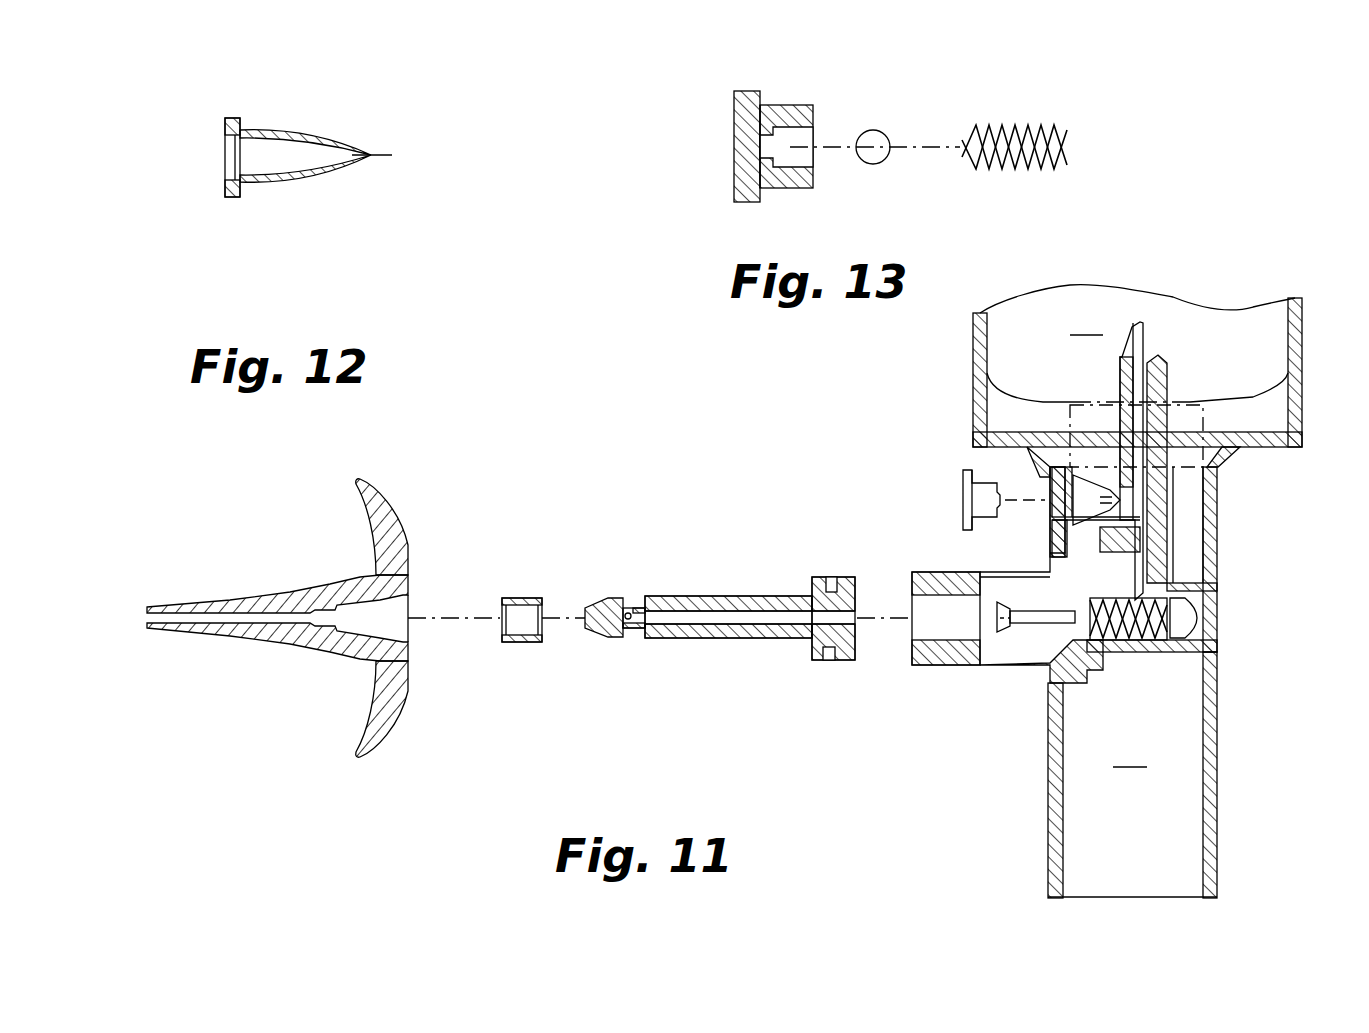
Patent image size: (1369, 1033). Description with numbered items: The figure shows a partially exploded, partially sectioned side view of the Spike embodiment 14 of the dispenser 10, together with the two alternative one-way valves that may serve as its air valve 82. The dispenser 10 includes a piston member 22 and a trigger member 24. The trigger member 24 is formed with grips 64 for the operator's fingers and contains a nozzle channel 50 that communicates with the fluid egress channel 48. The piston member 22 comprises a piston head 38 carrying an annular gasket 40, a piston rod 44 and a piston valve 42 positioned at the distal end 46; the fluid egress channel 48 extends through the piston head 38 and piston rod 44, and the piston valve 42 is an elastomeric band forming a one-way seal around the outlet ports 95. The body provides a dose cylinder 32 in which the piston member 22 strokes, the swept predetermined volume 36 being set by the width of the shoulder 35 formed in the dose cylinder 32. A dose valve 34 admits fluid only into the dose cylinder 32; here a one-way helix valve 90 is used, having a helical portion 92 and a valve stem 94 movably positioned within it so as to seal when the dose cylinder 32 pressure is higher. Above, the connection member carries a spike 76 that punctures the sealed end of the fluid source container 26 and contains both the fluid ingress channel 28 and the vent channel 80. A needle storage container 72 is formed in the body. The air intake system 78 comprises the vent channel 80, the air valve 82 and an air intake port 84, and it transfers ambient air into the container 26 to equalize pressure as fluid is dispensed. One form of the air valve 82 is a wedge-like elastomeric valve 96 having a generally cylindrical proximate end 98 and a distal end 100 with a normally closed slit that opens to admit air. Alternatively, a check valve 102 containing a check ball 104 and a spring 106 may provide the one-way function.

In FIG. 11, the dispenser 10 is at (529, 590).
In FIG. 11, the Spike embodiment 14 is at (741, 556).
In FIG. 11, the piston member 22 is at (741, 607).
In FIG. 11, the trigger member 24 is at (317, 627).
In FIG. 11, the fluid source container 26 is at (1137, 381).
In FIG. 11, the fluid ingress channel 28 is at (1207, 436).
In FIG. 11, the dose cylinder 32 is at (980, 666).
In FIG. 11, the dose valve 34 is at (1210, 585).
In FIG. 11, the shoulder 35 is at (940, 668).
In FIG. 11, the predetermined volume 36 is at (1038, 655).
In FIG. 11, the piston head 38 is at (856, 580).
In FIG. 11, the annular gasket 40 is at (832, 578).
In FIG. 11, the piston valve 42 is at (515, 597).
In FIG. 11, the piston rod 44 is at (773, 640).
In FIG. 11, the distal end 46 is at (612, 597).
In FIG. 11, the fluid egress channel 48 is at (702, 624).
In FIG. 11, the nozzle channel 50 is at (392, 622).
In FIG. 11, the grips 64 is at (358, 497).
In FIG. 11, the storage container 72 is at (1132, 769).
In FIG. 11, the spike 76 is at (1172, 305).
In FIG. 11, the air intake system 78 is at (1085, 559).
In FIG. 11, the vent channel 80 is at (1138, 305).
In FIG. 12, the air valve 82 is at (336, 207).
In FIG. 13, the air valve 82 is at (1007, 94).
In FIG. 11, the air valve 82 is at (1028, 524).
In FIG. 13, the air intake port 84 is at (733, 112).
In FIG. 11, the air intake port 84 is at (965, 492).
In FIG. 11, the helix valve 90 is at (1225, 615).
In FIG. 11, the helical portion 92 is at (1162, 641).
In FIG. 11, the valve stem 94 is at (1010, 634).
In FIG. 11, the outlet ports 95 is at (626, 632).
In FIG. 12, the elastomeric valve 96 is at (352, 205).
In FIG. 12, the proximate end 98 is at (224, 198).
In FIG. 12, the distal end 100 is at (372, 158).
In FIG. 13, the check valve 102 is at (867, 111).
In FIG. 13, the check ball 104 is at (888, 138).
In FIG. 13, the spring 106 is at (1012, 125).